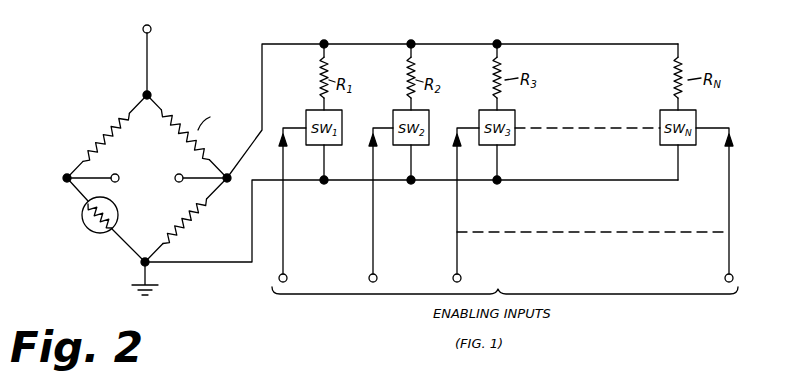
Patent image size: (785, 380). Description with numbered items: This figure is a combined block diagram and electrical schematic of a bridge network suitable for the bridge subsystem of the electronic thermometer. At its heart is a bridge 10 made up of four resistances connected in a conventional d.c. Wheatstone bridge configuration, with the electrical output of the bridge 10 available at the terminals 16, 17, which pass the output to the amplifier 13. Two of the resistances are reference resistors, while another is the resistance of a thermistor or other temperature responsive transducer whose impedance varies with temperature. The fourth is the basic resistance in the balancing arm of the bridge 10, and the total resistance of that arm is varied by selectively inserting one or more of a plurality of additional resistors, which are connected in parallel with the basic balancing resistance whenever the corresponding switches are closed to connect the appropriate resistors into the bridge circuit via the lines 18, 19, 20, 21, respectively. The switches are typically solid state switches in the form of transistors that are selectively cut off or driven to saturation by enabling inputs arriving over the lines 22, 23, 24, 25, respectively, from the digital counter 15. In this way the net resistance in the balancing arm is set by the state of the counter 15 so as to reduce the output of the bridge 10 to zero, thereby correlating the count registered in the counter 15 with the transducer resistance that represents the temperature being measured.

The bridge 10 is at (78, 152).
The amplifier 13 is at (156, 212).
The digital counter 15 is at (496, 328).
The terminal 16 is at (117, 173).
The terminal 17 is at (186, 157).
The line 18 is at (327, 166).
The line 19 is at (413, 166).
The line 20 is at (500, 167).
The line 21 is at (674, 163).
The line 22 is at (285, 251).
The line 23 is at (375, 251).
The line 24 is at (458, 251).
The line 25 is at (727, 244).